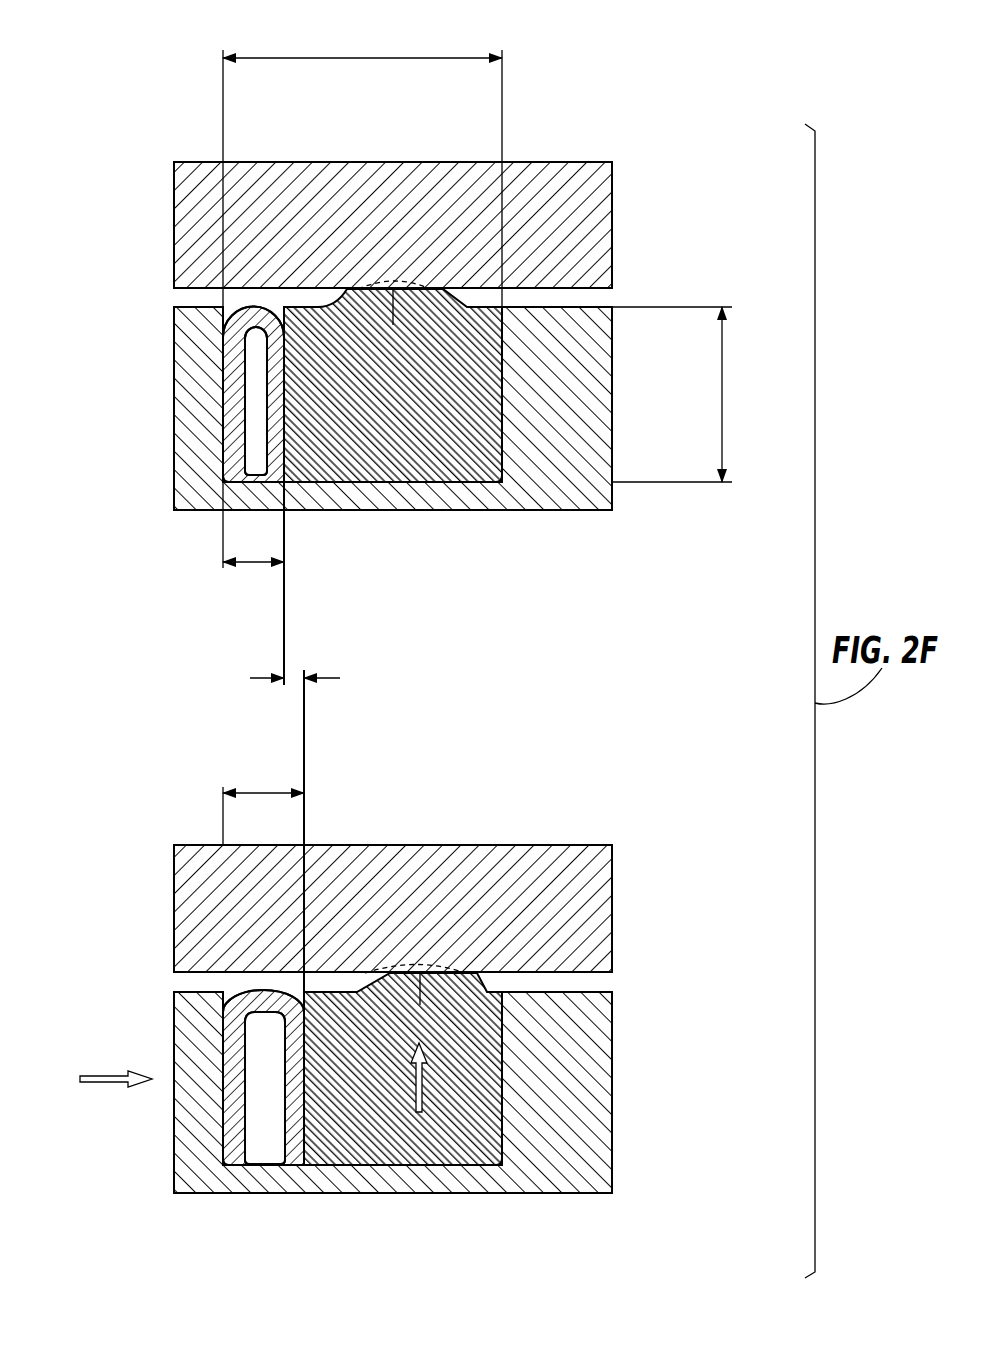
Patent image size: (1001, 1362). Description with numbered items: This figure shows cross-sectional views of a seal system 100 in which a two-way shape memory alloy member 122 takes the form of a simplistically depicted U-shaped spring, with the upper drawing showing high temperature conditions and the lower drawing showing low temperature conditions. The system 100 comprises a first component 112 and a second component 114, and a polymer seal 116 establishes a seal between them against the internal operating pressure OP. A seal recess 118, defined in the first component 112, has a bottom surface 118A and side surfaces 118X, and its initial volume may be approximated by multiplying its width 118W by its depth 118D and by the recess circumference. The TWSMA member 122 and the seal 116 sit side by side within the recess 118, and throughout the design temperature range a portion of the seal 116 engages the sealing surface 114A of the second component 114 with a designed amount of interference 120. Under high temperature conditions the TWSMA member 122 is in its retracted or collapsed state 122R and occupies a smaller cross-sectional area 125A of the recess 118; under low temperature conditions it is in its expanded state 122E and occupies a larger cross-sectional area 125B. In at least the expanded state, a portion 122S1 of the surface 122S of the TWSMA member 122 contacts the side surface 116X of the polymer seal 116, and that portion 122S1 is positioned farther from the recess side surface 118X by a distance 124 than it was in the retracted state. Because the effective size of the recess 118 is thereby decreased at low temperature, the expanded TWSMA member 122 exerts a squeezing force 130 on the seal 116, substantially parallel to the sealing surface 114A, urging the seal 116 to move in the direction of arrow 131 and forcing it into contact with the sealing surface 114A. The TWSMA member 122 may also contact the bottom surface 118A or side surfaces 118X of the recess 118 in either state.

The seal system 100 is at (150, 182).
The first component 112 is at (605, 398).
The second component 114 is at (598, 198).
The sealing surface 114A is at (548, 290).
The polymer seal 116 is at (478, 357).
The side surface of the polymer seal 116X is at (290, 405).
The seal recess 118 is at (412, 483).
The bottom surface of the seal recess 118A is at (368, 483).
The side surface of the seal recess 118X is at (225, 380).
The width of the seal recess 118W is at (337, 58).
The depth of the seal recess 118D is at (724, 415).
The interference 120 is at (393, 288).
The two-way shape memory alloy member 122 is at (236, 398).
The retracted or collapsed state of the TWSMA member 122R is at (236, 352).
The expanded state of the TWSMA member 122E is at (236, 1028).
The surface of the TWSMA member 122S is at (270, 452).
The portion of the TWSMA member surface 122S1 is at (303, 1080).
The distance 124 is at (296, 680).
The smaller cross-sectional area 125A is at (255, 565).
The larger cross-sectional area 125B is at (262, 795).
The force 130 is at (87, 1080).
The direction of seal movement 131 is at (424, 1088).
The operating pressure OP is at (215, 300).